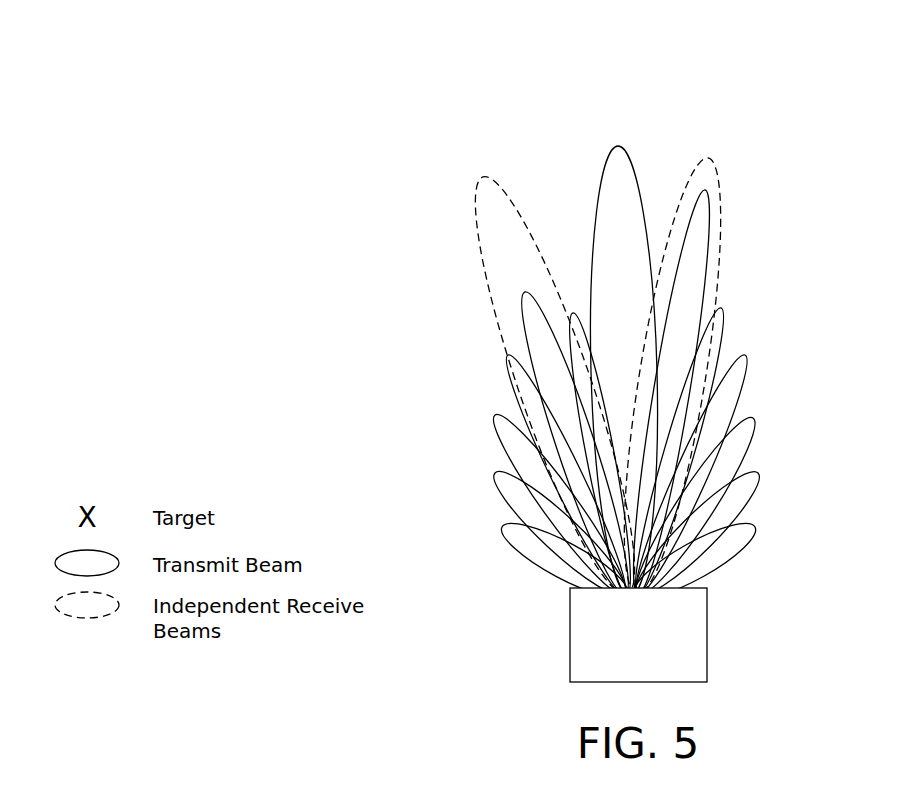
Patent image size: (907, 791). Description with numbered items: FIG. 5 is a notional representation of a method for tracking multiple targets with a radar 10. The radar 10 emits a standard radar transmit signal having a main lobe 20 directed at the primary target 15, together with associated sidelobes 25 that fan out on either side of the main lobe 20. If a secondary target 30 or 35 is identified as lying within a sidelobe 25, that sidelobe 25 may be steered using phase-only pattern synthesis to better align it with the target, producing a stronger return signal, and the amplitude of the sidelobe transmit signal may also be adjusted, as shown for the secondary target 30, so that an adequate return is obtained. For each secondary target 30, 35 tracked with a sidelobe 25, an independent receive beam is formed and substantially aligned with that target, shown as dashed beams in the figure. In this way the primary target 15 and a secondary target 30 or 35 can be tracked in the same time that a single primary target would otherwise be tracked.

The radar 10 is at (658, 635).
The primary target 15 is at (615, 61).
The main lobe 20 is at (621, 174).
The sidelobes 25 is at (535, 331).
The secondary target 30 is at (709, 153).
The secondary target 35 is at (513, 247).